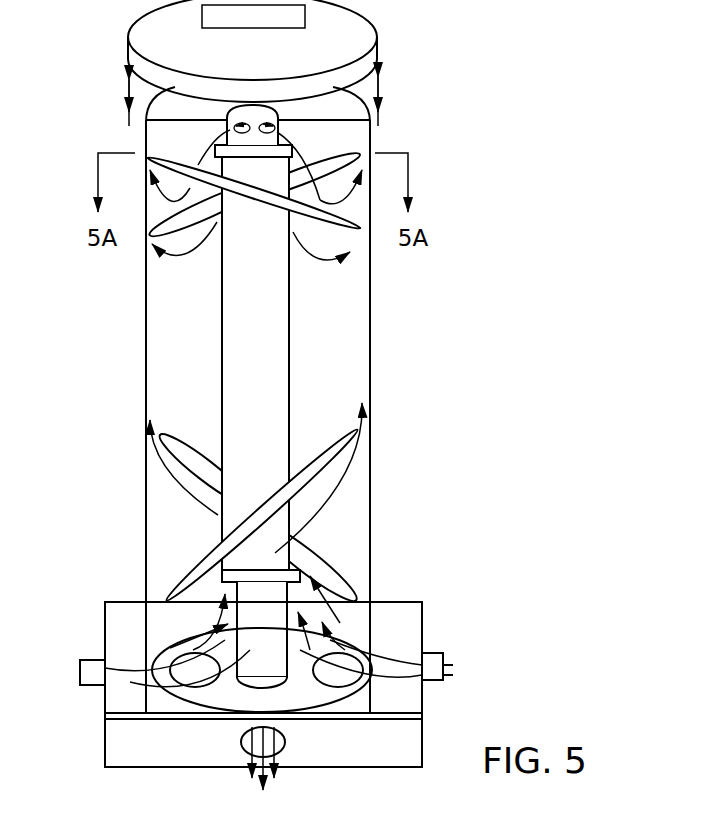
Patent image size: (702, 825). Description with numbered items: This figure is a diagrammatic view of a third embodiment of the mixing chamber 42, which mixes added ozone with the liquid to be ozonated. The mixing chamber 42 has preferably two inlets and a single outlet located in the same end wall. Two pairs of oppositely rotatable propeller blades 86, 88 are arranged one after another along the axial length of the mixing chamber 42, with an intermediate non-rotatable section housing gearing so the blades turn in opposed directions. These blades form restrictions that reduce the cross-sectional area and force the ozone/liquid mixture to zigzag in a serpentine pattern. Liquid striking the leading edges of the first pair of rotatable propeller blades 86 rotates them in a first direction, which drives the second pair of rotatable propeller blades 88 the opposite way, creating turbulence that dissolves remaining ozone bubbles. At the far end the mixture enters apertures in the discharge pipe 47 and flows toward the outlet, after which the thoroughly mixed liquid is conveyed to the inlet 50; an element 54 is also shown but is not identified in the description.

The mixing chamber 42 is at (145, 272).
The discharge pipe 47 is at (278, 104).
The inlet 50 is at (80, 660).
The drain outlet 54 is at (285, 747).
The first pair of rotatable propeller blades 86 is at (352, 447).
The second pair of rotatable propeller blades 88 is at (347, 158).